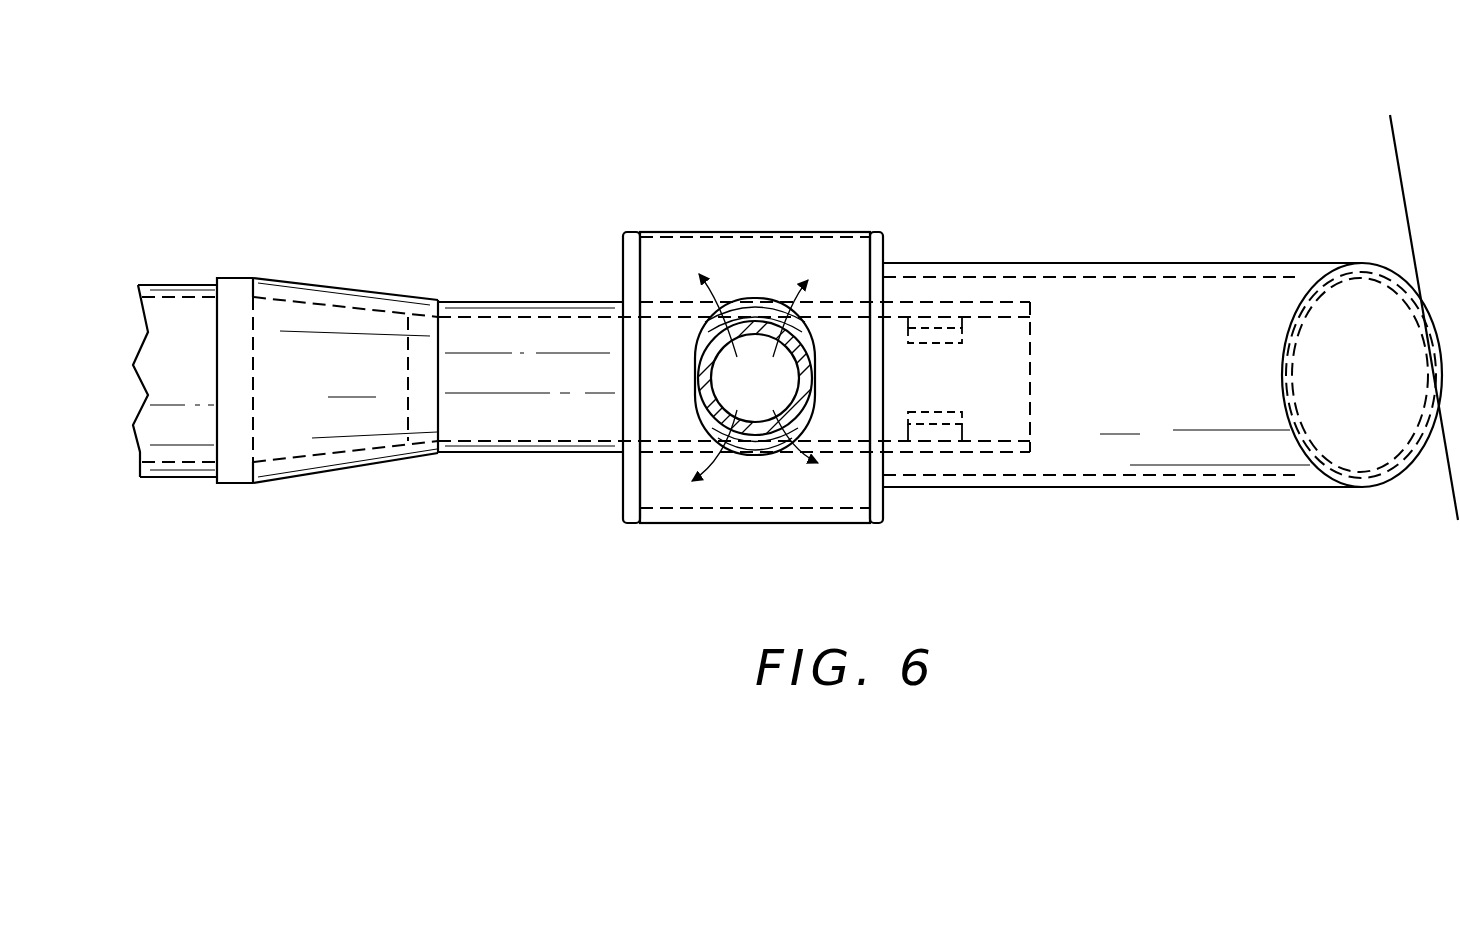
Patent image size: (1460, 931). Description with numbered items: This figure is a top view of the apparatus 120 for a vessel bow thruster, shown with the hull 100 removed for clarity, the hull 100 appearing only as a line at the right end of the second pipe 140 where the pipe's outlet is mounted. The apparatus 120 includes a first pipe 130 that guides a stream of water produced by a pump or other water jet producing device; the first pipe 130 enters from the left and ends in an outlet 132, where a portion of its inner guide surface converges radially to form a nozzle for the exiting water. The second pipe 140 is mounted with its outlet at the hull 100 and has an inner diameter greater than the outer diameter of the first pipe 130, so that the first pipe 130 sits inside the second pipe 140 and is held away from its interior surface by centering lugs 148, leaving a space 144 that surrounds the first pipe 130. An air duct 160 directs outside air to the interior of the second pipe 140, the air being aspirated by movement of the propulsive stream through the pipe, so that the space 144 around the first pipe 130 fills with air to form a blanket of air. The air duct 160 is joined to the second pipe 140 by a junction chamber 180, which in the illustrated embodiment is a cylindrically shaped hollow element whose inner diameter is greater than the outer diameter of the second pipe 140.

The hull 100 is at (1398, 140).
The apparatus 120 is at (734, 304).
The first pipe 130 is at (492, 455).
The outlet 132 is at (1033, 415).
The second pipe 140 is at (1162, 372).
The space 144 is at (968, 462).
The centering lugs 148 is at (1187, 390).
The air duct 160 is at (697, 397).
The junction chamber 180 is at (690, 232).